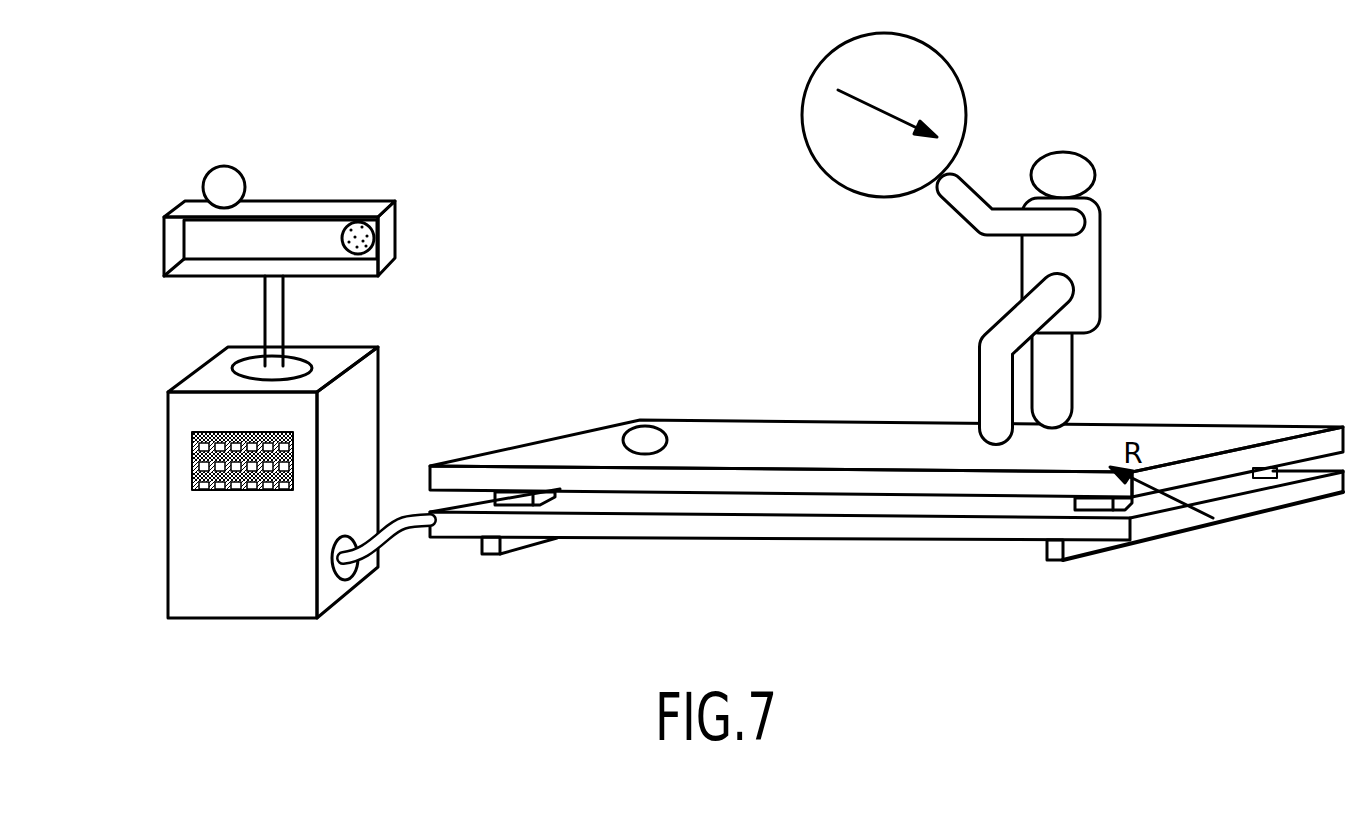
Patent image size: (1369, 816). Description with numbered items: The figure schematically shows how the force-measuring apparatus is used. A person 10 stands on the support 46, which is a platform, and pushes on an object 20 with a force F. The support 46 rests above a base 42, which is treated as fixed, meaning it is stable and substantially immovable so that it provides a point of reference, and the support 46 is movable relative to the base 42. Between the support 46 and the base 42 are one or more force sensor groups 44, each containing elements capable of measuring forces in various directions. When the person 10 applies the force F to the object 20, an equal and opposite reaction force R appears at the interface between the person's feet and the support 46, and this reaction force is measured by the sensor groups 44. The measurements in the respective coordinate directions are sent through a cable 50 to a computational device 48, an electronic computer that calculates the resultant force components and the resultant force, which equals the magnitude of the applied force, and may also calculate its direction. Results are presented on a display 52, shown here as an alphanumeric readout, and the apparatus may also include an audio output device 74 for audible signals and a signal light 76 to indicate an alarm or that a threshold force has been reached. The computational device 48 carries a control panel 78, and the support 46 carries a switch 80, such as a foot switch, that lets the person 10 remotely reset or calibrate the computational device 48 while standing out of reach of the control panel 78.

The person 10 is at (1103, 236).
The object 20 is at (962, 80).
The base 42 is at (705, 540).
The force sensor groups 44 is at (1270, 473).
The support 46 is at (738, 421).
The computational device 48 is at (168, 472).
The cable 50 is at (392, 533).
The display 52 is at (342, 210).
The audio output device 74 is at (360, 255).
The signal light 76 is at (204, 180).
The control panel 78 is at (230, 492).
The switch 80 is at (626, 432).